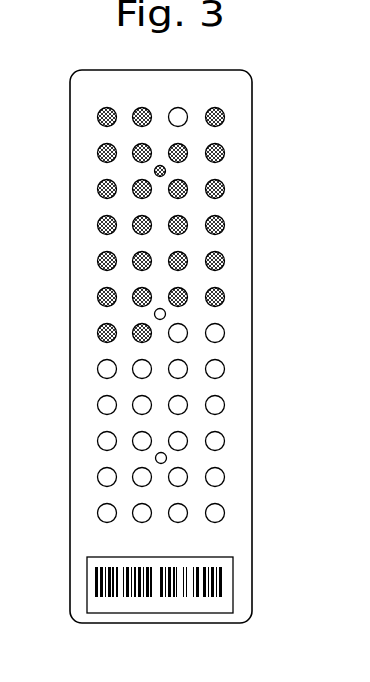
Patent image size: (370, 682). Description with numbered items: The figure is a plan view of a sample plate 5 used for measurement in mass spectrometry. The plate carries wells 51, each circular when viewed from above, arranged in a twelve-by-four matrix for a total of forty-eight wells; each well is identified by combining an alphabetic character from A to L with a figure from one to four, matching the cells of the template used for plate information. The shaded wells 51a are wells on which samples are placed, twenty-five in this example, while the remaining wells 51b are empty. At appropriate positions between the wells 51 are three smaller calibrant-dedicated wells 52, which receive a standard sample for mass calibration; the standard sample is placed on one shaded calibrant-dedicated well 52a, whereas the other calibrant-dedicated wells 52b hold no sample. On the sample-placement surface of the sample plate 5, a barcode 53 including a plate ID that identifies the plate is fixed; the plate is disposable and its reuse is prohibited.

The sample plate 5 is at (247, 107).
The wells 51 is at (219, 329).
The shaded wells 51a is at (225, 295).
The empty wells 51b is at (225, 331).
The calibrant-dedicated wells 52 is at (258, 298).
The calibrant-dedicated well with standard sample 52a is at (165, 168).
The empty calibrant-dedicated wells 52b is at (164, 310).
The barcode 53 is at (225, 580).